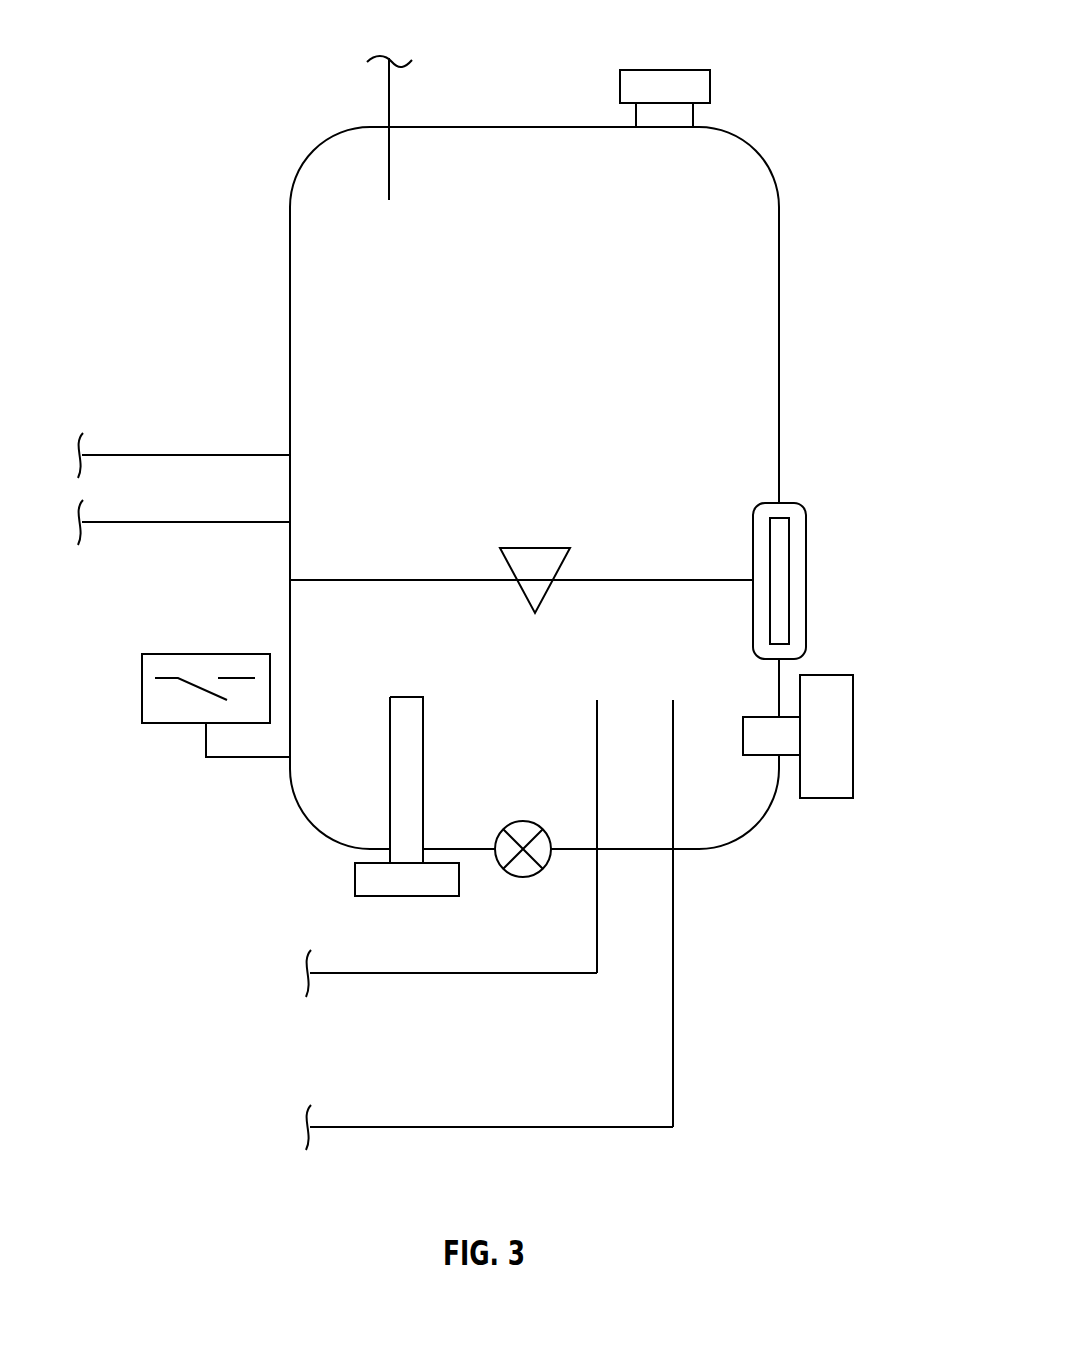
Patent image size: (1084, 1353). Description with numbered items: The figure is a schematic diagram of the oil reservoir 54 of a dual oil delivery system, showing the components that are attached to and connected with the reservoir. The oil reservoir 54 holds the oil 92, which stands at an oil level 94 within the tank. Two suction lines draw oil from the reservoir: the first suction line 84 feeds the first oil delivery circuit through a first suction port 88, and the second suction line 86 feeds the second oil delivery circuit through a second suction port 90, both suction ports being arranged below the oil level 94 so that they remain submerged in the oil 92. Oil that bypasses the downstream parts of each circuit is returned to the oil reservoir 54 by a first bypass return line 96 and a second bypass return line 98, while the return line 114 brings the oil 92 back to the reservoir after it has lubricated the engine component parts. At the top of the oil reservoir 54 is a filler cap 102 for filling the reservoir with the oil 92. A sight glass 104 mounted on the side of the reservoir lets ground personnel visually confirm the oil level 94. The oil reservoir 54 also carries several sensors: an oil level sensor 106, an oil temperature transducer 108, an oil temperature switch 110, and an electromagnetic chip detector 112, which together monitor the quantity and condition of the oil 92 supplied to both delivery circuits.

The oil reservoir 54 is at (779, 248).
The first suction line 84 is at (453, 975).
The second suction line 86 is at (458, 1130).
The first suction port 88 is at (597, 701).
The second suction port 90 is at (673, 701).
The oil 92 is at (637, 597).
The oil level 94 is at (382, 581).
The first bypass return line 96 is at (185, 522).
The second bypass return line 98 is at (185, 455).
The filler cap 102 is at (663, 70).
The sight glass 104 is at (806, 580).
The oil level sensor 106 is at (355, 877).
The oil temperature transducer 108 is at (853, 735).
The oil temperature switch 110 is at (142, 689).
The electromagnetic chip detector 112 is at (525, 821).
The return line 114 is at (390, 105).